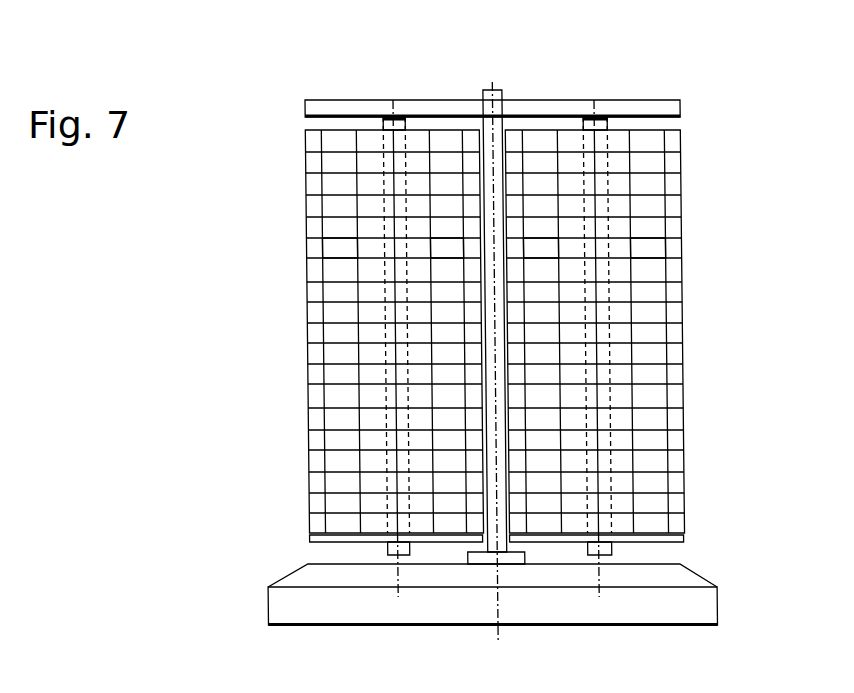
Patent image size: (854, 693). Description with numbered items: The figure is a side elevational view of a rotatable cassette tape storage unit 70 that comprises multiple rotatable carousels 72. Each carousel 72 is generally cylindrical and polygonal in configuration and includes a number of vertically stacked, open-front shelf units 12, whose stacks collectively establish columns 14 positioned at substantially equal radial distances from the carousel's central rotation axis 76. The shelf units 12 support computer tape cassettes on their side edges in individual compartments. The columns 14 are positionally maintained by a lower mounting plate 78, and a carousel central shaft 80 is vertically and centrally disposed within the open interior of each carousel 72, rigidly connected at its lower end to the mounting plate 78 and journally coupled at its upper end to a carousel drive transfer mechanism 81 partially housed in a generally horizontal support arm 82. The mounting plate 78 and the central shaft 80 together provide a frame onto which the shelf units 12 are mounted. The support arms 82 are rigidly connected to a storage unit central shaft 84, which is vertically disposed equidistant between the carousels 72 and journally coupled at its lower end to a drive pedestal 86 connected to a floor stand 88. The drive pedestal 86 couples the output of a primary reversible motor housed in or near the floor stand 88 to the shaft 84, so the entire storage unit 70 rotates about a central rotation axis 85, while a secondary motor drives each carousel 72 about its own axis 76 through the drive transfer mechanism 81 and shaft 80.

The shelf units 12 is at (338, 165).
The columns 14 is at (350, 274).
The cassette tape storage unit 70 is at (128, 470).
The rotatable carousels 72 is at (288, 416).
The central rotation axis 76 is at (393, 100).
The lower mounting plate 78 is at (306, 538).
The carousel central shaft 80 is at (406, 138).
The carousel drive transfer mechanism 81 is at (383, 118).
The horizontal support arm 82 is at (305, 109).
The storage unit central shaft 84 is at (502, 94).
The central rotation axis of the storage unit 85 is at (493, 82).
The drive pedestal 86 is at (465, 562).
The floor stand 88 is at (286, 604).